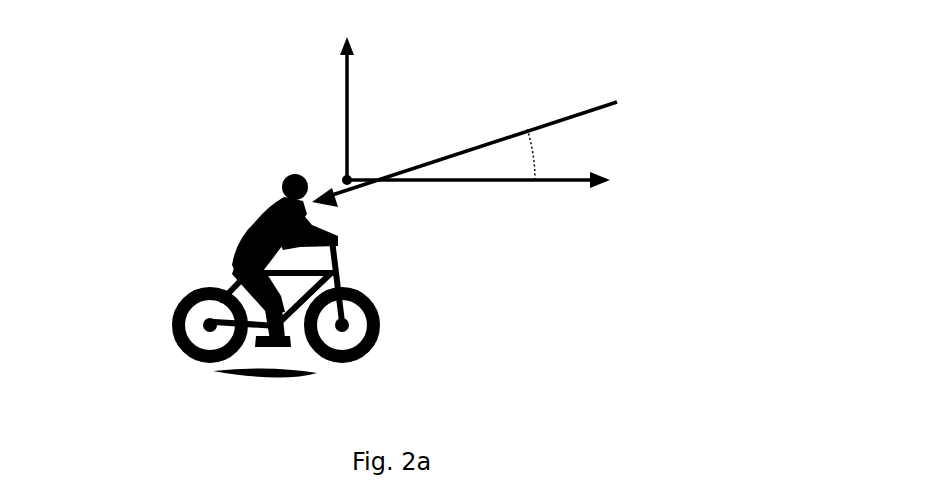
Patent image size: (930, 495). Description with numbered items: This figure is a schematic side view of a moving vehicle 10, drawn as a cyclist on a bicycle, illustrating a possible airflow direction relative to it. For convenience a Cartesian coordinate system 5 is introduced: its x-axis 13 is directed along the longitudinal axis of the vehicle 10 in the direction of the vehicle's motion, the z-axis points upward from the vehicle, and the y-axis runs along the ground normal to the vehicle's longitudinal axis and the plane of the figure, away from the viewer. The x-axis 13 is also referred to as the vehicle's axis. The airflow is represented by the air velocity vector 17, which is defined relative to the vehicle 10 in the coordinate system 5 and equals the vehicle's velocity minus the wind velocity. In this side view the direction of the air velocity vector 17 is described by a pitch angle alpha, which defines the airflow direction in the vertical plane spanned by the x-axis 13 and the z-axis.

The Cartesian coordinate system 5 is at (290, 87).
The vehicle 10 is at (230, 247).
The x-axis 13 is at (572, 180).
The air velocity vector 17 is at (583, 110).